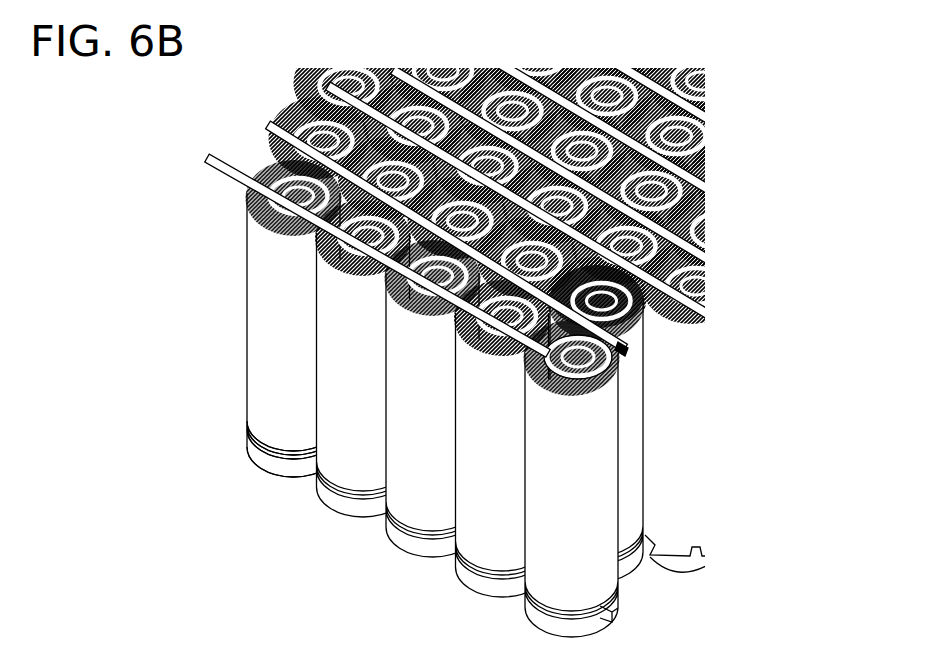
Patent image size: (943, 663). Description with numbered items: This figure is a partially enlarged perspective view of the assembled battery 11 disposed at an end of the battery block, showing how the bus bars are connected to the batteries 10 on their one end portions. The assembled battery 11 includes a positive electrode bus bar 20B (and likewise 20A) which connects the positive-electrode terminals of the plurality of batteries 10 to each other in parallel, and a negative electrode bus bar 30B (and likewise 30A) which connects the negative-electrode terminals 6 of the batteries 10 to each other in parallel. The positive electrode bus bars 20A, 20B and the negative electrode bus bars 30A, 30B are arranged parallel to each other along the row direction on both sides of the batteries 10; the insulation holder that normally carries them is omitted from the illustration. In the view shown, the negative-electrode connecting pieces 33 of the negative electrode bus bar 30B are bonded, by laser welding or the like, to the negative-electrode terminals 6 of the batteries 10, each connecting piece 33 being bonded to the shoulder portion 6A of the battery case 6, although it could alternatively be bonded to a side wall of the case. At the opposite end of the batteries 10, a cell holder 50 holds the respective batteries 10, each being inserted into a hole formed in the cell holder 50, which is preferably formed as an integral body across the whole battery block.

The negative-electrode terminal 6 is at (572, 478).
The shoulder portion 6A is at (560, 395).
The battery 10 is at (268, 327).
The assembled battery 11 is at (598, 481).
The positive electrode bus bar 20A is at (206, 159).
The positive electrode bus bar 20B is at (268, 124).
The negative electrode bus bar 30A is at (706, 312).
The negative electrode bus bar 30B is at (628, 345).
The negative-electrode connecting piece 33 is at (620, 360).
The cell holder 50 is at (262, 458).